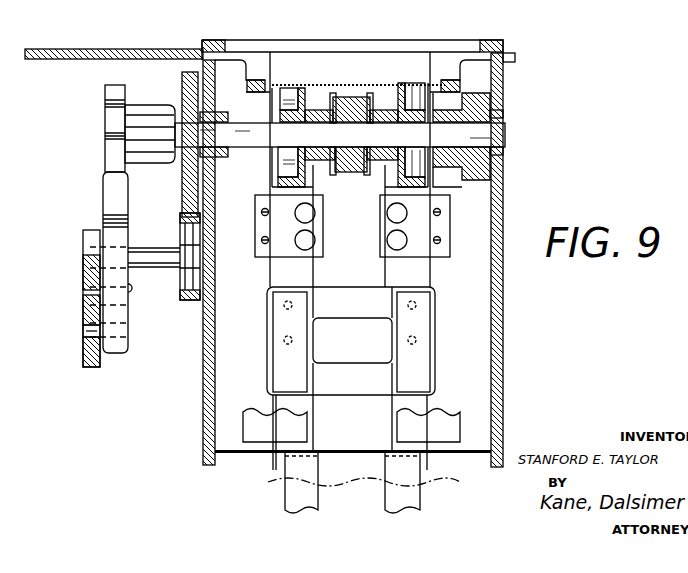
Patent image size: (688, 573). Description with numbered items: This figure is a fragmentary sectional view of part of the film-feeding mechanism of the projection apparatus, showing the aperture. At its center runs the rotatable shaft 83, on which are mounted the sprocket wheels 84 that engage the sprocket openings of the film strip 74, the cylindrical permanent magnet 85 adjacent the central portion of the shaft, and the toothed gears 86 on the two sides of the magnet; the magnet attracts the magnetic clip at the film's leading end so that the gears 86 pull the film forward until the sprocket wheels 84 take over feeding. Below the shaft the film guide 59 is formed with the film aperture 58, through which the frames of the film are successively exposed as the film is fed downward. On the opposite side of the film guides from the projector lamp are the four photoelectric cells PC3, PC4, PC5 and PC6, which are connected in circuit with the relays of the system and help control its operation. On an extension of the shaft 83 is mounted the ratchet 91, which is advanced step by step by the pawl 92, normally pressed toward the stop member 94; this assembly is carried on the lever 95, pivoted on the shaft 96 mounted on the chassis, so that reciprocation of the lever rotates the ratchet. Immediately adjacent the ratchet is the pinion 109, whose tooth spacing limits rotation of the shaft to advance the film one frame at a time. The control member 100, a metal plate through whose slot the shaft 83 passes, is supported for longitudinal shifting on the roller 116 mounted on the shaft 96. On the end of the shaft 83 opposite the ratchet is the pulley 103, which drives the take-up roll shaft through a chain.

The film aperture 58 is at (380, 338).
The film guide 59 is at (412, 270).
The film strip 74 is at (305, 83).
The rotatable shaft 83 is at (487, 135).
The sprocket wheels 84 is at (287, 82).
The cylindrical permanent magnet 85 is at (348, 106).
The toothed gears 86 is at (372, 98).
The ratchet 91 is at (107, 117).
The pawl 92 is at (107, 213).
The stop member 94 is at (72, 312).
The lever 95 is at (83, 276).
The pivot shaft 96 is at (157, 258).
The control member 100 is at (182, 197).
The pulley 103 is at (483, 172).
The pinion 109 is at (148, 105).
The roller 116 is at (177, 301).
The photoelectric cell PC3 is at (315, 213).
The photoelectric cell PC4 is at (311, 246).
The photoelectric cell PC5 is at (388, 215).
The photoelectric cell PC6 is at (388, 240).